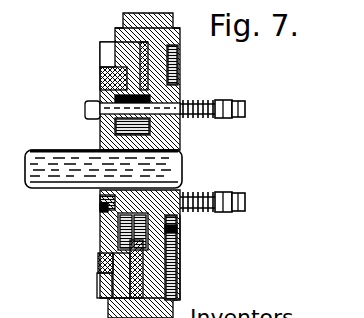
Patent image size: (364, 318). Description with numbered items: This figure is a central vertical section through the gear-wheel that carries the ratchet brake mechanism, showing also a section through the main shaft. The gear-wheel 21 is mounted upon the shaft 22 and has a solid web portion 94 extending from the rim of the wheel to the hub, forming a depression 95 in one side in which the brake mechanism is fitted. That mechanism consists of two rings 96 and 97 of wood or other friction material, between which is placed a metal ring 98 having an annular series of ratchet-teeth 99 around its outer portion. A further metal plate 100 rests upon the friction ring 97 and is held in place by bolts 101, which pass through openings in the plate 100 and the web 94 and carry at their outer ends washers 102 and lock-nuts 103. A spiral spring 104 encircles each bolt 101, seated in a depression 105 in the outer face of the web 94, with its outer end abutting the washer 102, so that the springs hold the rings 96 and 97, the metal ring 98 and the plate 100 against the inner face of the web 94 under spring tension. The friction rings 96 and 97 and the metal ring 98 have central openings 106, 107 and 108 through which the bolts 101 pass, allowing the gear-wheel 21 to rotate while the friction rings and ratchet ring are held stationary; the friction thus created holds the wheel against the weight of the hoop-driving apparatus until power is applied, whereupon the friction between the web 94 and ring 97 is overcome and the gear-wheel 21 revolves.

The gear-wheel 21 is at (158, 7).
The shaft 22 is at (103, 166).
The web portion 94 is at (178, 269).
The depression 95 is at (108, 302).
The friction ring 96 is at (118, 32).
The friction ring 97 is at (100, 256).
The metal ring 98 is at (100, 80).
The ratchet-teeth 99 is at (109, 171).
The metal plate 100 is at (118, 230).
The bolt 101 is at (100, 202).
The washer 102 is at (219, 100).
The lock-nut 103 is at (240, 118).
The spiral spring 104 is at (186, 218).
The depression 105 is at (182, 95).
The central opening 106 is at (178, 246).
The central opening 107 is at (148, 240).
The central opening 108 is at (100, 126).